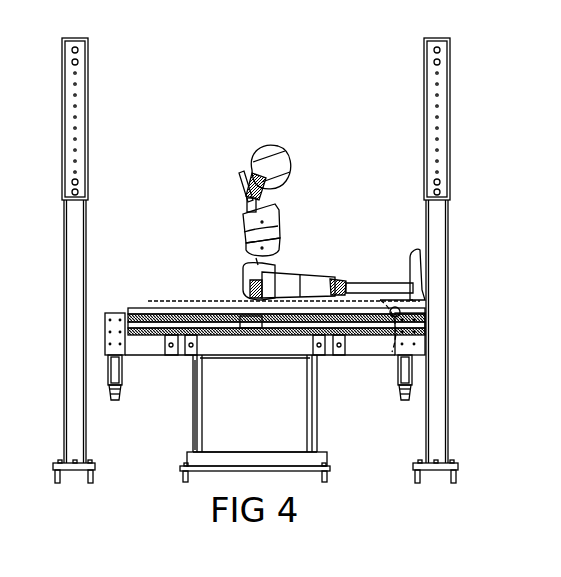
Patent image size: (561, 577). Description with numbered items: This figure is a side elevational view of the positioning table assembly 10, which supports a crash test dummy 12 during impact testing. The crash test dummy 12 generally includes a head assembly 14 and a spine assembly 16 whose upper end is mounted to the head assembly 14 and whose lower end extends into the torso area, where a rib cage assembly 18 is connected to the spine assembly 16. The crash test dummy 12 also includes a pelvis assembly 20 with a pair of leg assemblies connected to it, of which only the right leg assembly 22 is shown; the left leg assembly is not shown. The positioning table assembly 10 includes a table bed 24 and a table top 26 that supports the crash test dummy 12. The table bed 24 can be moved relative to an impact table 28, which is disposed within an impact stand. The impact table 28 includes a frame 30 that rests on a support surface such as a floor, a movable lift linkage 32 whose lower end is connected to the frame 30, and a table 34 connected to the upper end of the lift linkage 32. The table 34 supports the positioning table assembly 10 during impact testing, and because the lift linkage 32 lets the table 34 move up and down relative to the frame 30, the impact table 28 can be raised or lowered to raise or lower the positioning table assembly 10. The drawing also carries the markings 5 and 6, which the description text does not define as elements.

The positioning table assembly 10 is at (141, 470).
The crash test dummy 12 is at (242, 226).
The head assembly 14 is at (283, 162).
The spine assembly 16 is at (246, 200).
The rib cage assembly 18 is at (278, 212).
The pelvis assembly 20 is at (266, 278).
The right leg assembly 22 is at (323, 283).
The table bed 24 is at (104, 365).
The table top 26 is at (148, 301).
The impact table 28 is at (190, 425).
The frame 30 is at (297, 463).
The lift linkage 32 is at (318, 425).
The table 34 is at (232, 348).
The right bracket 5 is at (430, 355).
The clamp 6 is at (250, 310).